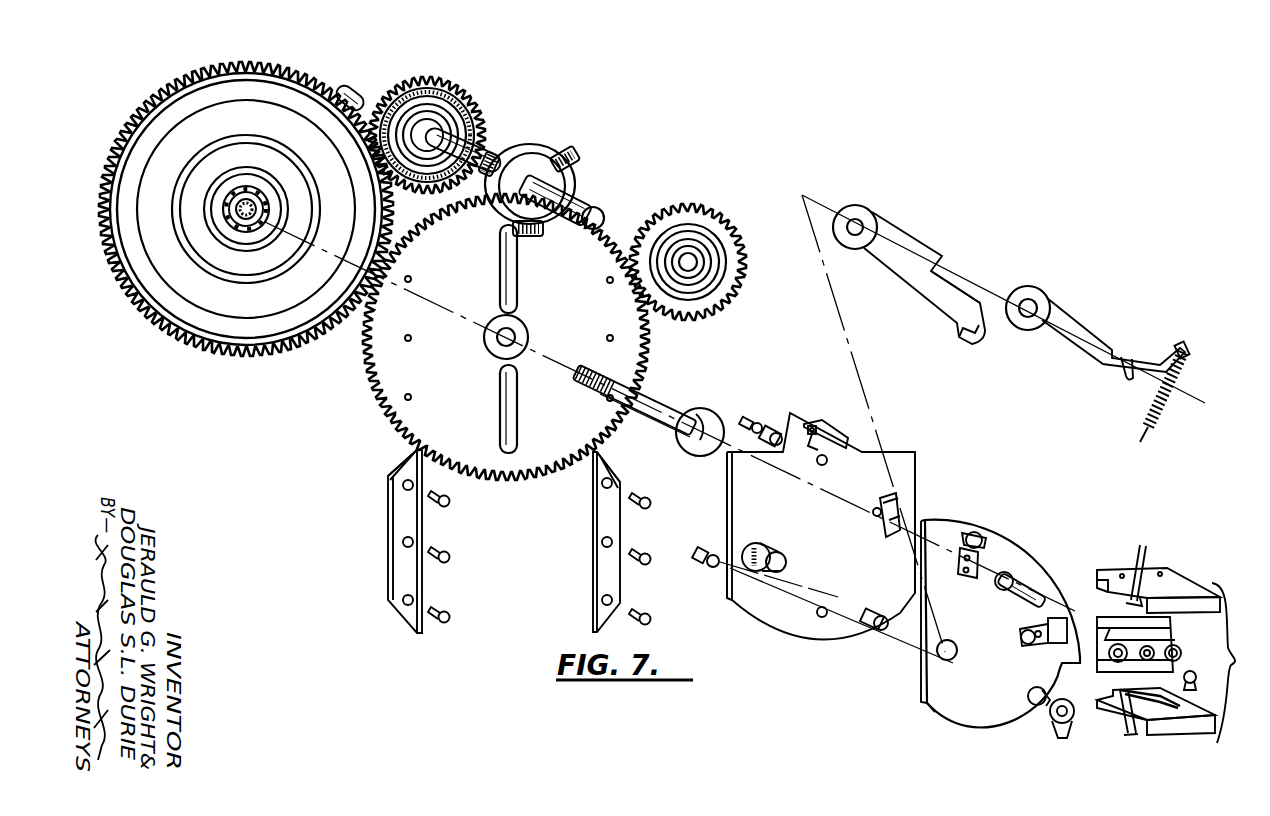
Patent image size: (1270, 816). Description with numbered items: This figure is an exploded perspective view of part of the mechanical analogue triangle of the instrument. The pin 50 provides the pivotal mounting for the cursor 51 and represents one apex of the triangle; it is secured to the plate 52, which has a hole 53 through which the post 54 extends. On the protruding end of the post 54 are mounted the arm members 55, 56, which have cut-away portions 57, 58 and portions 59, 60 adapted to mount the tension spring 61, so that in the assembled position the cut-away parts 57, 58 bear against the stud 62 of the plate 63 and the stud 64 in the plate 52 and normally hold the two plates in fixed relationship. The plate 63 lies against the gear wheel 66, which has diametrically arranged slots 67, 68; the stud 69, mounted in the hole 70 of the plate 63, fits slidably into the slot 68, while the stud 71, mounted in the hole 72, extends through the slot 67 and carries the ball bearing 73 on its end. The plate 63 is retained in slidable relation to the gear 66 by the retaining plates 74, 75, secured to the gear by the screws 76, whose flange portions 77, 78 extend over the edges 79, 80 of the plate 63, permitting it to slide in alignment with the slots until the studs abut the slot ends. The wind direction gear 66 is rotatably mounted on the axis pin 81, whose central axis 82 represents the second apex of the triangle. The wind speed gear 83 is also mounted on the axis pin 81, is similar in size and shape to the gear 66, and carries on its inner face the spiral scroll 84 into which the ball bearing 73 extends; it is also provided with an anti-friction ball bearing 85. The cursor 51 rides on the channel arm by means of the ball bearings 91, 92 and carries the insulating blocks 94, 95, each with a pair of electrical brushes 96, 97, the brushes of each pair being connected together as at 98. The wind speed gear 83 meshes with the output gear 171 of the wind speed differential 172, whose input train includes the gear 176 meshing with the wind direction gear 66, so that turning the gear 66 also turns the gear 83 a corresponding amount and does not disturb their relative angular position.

The pin 50 is at (1029, 588).
The cursor 51 is at (1239, 663).
The plate 52 is at (1013, 524).
The hole 53 is at (936, 655).
The post 54 is at (772, 570).
The arm member 55 is at (924, 236).
The arm member 56 is at (1084, 323).
The cut-away portion 57 is at (961, 288).
The cut-away portion 58 is at (1127, 357).
The portion 59 is at (983, 351).
The portion 60 is at (1179, 344).
The tension spring 61 is at (1181, 377).
The stud 62 is at (877, 630).
The plate 63 is at (911, 448).
The stud 64 is at (1052, 702).
The gear wheel 66 is at (390, 365).
The slot 67 is at (520, 264).
The slot 68 is at (520, 409).
The stud 69 is at (708, 567).
The hole 70 is at (820, 618).
The stud 71 is at (770, 429).
The hole 72 is at (826, 458).
The ball bearing 73 is at (755, 423).
The retaining plate 74 is at (397, 513).
The retaining plate 75 is at (606, 529).
The screws 76 is at (441, 610).
The flange portion 77 is at (418, 468).
The flange portion 78 is at (598, 462).
The edge 79 is at (727, 496).
The edge 80 is at (916, 483).
The axis pin 81 is at (655, 400).
The central axis 82 is at (687, 446).
The wind speed gear 83 is at (247, 330).
The spiral scroll 84 is at (185, 306).
The anti-friction ball bearing 85 is at (246, 220).
The ball bearing 91 is at (1176, 657).
The ball bearing 92 is at (1108, 656).
The insulating block 94 is at (1170, 577).
The insulating block 95 is at (1113, 714).
The electrical brushes 96 is at (1140, 552).
The electrical brushes 97 is at (1129, 733).
The connection 98 is at (1196, 682).
The output gear 171 is at (462, 100).
The wind speed differential 172 is at (571, 128).
The gear 176 is at (716, 214).